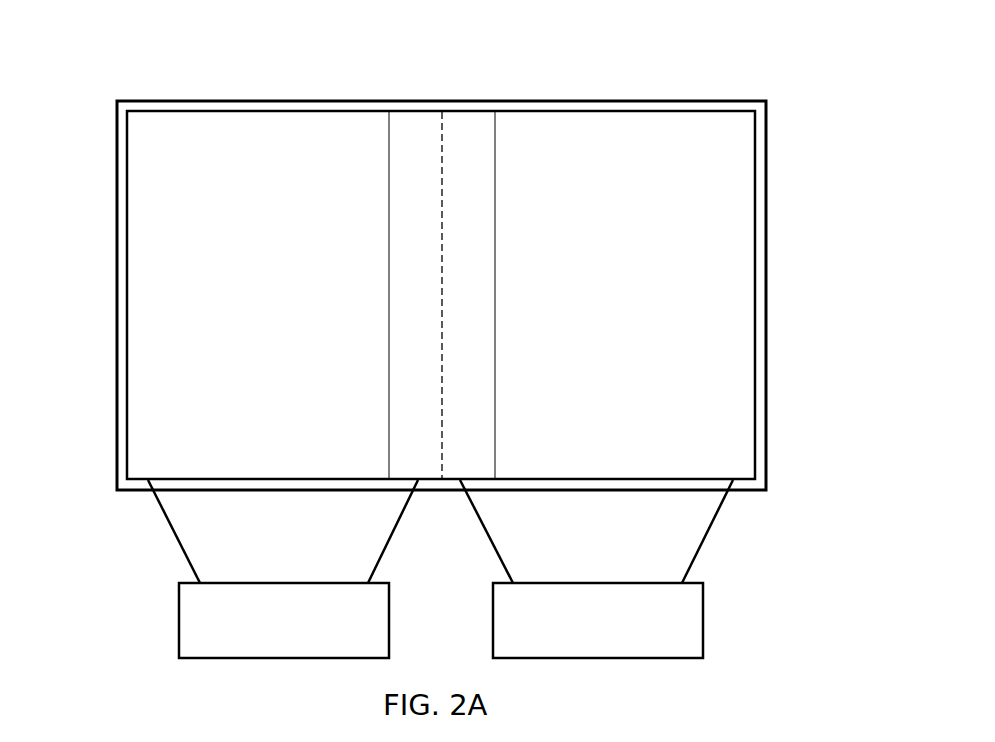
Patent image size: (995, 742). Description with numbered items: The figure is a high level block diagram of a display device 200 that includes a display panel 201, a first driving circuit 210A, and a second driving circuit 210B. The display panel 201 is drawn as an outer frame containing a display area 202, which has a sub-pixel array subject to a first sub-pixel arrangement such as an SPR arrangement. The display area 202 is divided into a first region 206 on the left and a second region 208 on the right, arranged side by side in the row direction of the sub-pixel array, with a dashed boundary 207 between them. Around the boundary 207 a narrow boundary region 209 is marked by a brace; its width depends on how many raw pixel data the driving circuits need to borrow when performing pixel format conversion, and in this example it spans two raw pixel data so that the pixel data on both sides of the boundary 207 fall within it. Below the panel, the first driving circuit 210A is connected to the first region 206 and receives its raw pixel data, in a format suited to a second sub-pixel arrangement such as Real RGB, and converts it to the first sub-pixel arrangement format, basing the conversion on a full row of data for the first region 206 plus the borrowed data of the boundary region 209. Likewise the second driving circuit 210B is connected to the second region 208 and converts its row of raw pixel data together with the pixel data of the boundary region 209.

The display device 200 is at (63, 112).
The display panel 201 is at (766, 270).
The display area 202 is at (741, 192).
The first region 206 is at (242, 133).
The boundary 207 is at (443, 268).
The second region 208 is at (649, 132).
The boundary region 209 is at (495, 100).
The first driving circuit 210A is at (253, 634).
The second driving circuit 210B is at (567, 634).